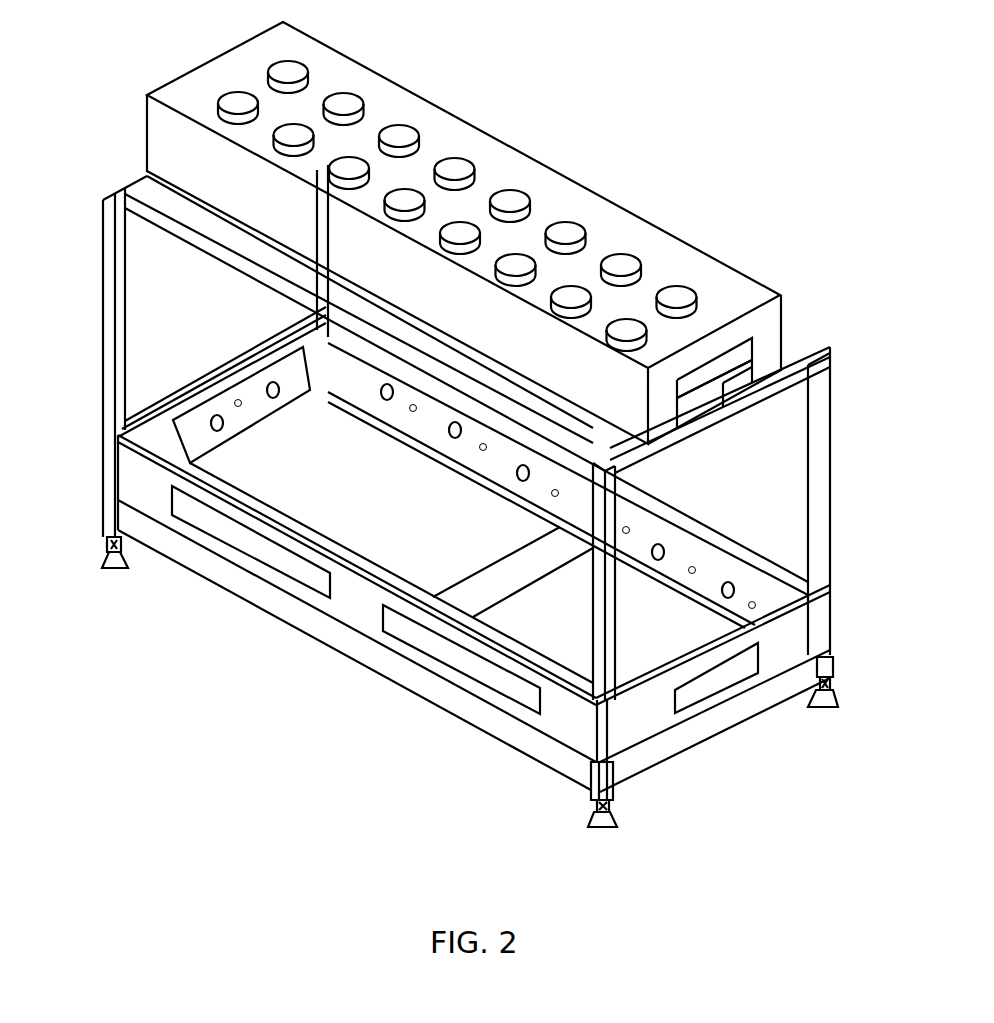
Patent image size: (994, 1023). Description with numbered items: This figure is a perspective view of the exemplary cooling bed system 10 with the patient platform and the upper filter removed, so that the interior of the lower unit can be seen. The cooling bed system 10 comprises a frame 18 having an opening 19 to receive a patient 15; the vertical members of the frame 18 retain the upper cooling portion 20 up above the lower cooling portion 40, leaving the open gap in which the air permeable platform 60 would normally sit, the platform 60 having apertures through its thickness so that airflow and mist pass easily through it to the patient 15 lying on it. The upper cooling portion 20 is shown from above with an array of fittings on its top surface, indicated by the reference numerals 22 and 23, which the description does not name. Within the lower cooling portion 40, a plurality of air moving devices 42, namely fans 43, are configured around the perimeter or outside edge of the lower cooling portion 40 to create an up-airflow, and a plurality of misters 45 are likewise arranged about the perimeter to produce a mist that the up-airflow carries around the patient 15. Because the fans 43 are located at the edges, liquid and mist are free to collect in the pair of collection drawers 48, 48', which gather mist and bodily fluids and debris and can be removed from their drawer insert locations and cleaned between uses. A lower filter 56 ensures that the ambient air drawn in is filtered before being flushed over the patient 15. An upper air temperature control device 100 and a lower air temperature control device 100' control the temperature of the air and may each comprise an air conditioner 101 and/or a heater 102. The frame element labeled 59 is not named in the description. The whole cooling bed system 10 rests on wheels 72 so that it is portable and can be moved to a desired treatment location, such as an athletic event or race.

The cooling bed system 10 is at (764, 224).
The patient 15 is at (757, 557).
The frame 18 is at (833, 385).
The opening 19 is at (767, 490).
The upper cooling portion 20 is at (683, 263).
The nozzle cap 22 is at (396, 130).
The nozzle 23 is at (452, 162).
The lower cooling portion 40 is at (798, 627).
The air moving devices 42 is at (273, 380).
The fans 43 is at (210, 415).
The misters 45 is at (238, 398).
The collection drawer 48 is at (391, 607).
The collection drawer 48' is at (358, 563).
The lower filter 56 is at (262, 592).
The upper rail 59 is at (228, 272).
The air permeable platform 60 is at (190, 393).
The wheels 72 is at (100, 557).
The upper air temperature control device 100 is at (778, 369).
The lower air temperature control device 100' is at (742, 711).
The air conditioner 101 is at (703, 402).
The heater 102 is at (733, 385).